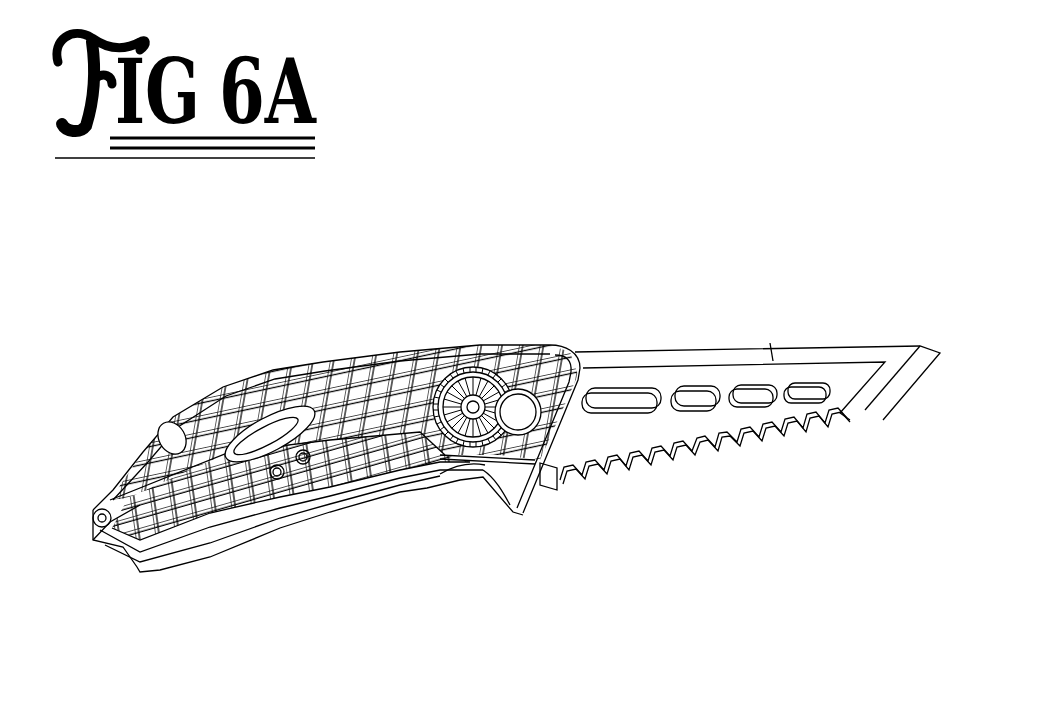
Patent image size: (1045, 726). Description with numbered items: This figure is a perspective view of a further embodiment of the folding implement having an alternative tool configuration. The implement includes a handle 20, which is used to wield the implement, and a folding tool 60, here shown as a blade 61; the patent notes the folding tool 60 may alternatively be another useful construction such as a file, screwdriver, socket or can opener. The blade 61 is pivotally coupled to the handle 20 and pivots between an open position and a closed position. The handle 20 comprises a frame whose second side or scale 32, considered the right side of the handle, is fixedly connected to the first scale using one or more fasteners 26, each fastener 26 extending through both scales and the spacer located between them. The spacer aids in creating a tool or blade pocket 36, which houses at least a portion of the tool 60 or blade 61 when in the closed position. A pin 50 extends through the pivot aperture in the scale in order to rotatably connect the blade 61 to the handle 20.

The handle 20 is at (359, 340).
The fastener 26 is at (160, 440).
The second scale 32 is at (225, 385).
The blade pocket 36 is at (355, 498).
The pin 50 is at (525, 394).
The folding tool 60 is at (740, 320).
The blade 61 is at (705, 446).